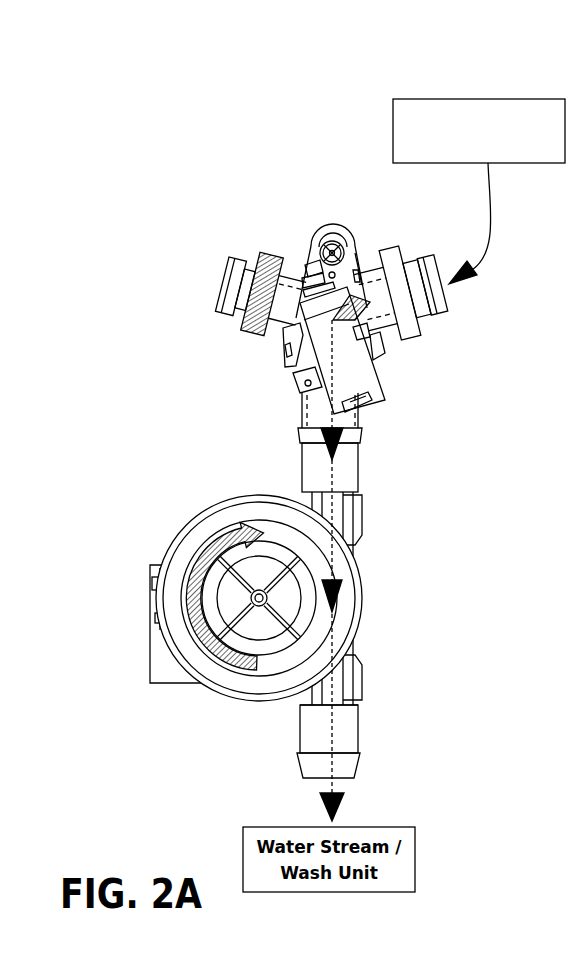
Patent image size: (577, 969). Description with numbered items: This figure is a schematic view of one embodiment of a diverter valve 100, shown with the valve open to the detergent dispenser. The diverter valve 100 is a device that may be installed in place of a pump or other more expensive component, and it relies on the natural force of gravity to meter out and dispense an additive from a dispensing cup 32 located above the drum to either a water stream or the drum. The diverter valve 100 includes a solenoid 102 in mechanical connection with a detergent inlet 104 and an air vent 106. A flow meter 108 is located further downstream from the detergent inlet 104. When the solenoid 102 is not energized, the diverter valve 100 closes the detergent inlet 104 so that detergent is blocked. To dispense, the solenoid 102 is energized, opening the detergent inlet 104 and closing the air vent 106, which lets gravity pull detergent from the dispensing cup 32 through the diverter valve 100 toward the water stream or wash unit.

The dispensing cup 32 is at (468, 98).
The diverter valve 100 is at (206, 181).
The solenoid 102 is at (378, 378).
The detergent inlet 104 is at (424, 258).
The air vent 106 is at (235, 257).
The flow meter 108 is at (358, 642).